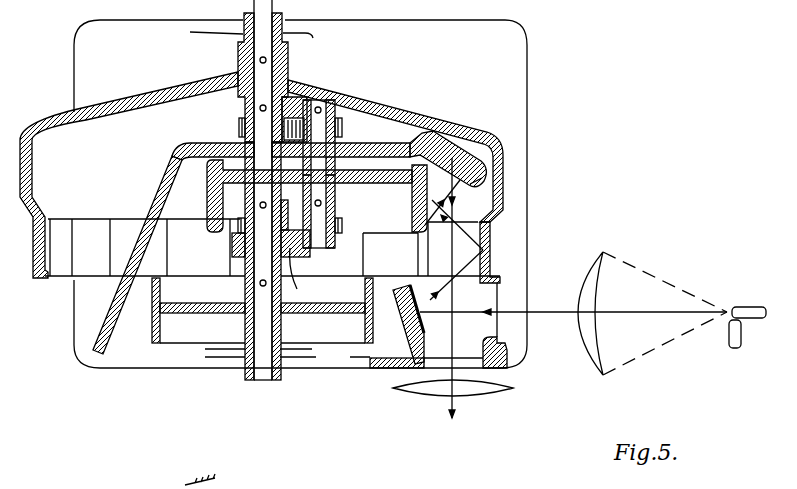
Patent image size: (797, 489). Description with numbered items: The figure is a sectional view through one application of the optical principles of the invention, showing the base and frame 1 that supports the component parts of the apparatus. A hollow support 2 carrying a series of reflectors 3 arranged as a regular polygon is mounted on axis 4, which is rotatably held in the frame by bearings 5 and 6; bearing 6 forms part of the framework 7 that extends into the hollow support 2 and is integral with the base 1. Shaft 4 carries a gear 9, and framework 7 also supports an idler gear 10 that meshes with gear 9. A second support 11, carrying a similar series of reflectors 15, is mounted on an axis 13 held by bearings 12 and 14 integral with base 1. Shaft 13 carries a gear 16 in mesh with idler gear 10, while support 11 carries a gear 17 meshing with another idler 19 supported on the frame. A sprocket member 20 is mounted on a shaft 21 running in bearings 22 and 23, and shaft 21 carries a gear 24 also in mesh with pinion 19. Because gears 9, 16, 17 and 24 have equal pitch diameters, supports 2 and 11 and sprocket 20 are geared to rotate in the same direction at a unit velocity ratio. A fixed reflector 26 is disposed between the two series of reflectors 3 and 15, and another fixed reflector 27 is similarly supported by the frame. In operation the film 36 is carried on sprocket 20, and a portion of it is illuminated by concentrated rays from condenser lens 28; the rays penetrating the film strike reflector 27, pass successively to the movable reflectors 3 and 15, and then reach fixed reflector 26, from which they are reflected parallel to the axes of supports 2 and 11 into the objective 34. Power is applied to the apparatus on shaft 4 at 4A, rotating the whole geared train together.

The base and frame 1 is at (521, 87).
The support 2 is at (503, 183).
The reflectors 3 is at (490, 262).
The axis 4 is at (287, 63).
The power input point on shaft 4 4A is at (270, 6).
The bearing 5 is at (243, 39).
The bearing 6 is at (243, 141).
The framework 7 is at (166, 184).
The gear 9 is at (239, 122).
The idler gear 10 is at (293, 112).
The support 11 is at (411, 197).
The bearing 12 is at (330, 143).
The axis 13 is at (328, 197).
The bearing 14 is at (326, 249).
The reflectors 15 is at (443, 153).
The gear 16 is at (340, 134).
The gear 17 is at (337, 230).
The idler 19 is at (303, 275).
The sprocket member 20 is at (333, 333).
The shaft 21 is at (245, 325).
The bearing 22 is at (245, 378).
The bearing 23 is at (262, 245).
The gear 24 is at (238, 228).
The fixed reflector 26 is at (466, 182).
The fixed reflector 27 is at (425, 323).
The condenser lens 28 is at (590, 357).
The objective 34 is at (477, 393).
The film 36 is at (498, 323).